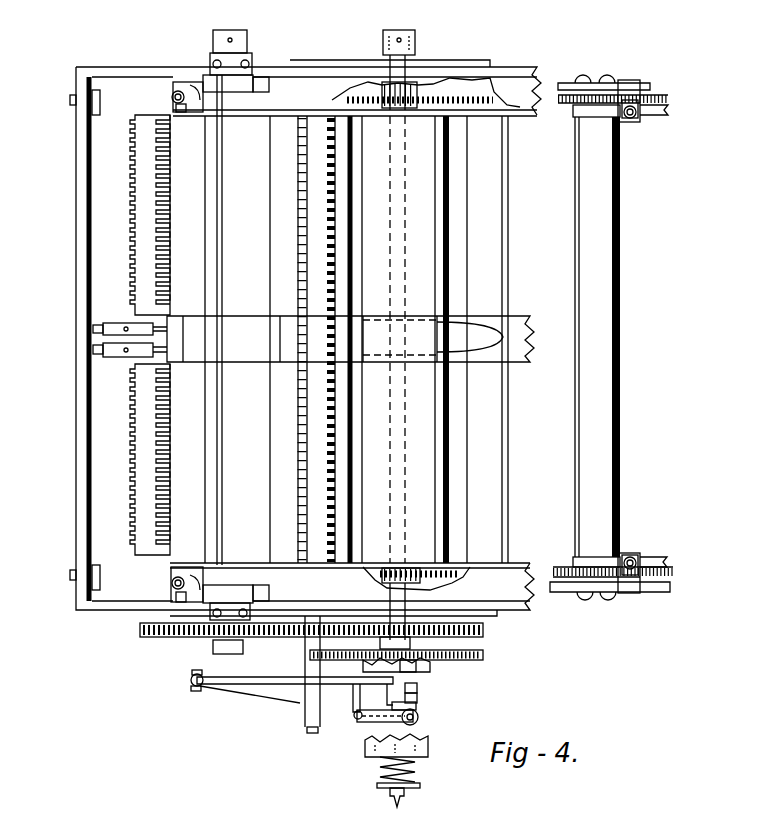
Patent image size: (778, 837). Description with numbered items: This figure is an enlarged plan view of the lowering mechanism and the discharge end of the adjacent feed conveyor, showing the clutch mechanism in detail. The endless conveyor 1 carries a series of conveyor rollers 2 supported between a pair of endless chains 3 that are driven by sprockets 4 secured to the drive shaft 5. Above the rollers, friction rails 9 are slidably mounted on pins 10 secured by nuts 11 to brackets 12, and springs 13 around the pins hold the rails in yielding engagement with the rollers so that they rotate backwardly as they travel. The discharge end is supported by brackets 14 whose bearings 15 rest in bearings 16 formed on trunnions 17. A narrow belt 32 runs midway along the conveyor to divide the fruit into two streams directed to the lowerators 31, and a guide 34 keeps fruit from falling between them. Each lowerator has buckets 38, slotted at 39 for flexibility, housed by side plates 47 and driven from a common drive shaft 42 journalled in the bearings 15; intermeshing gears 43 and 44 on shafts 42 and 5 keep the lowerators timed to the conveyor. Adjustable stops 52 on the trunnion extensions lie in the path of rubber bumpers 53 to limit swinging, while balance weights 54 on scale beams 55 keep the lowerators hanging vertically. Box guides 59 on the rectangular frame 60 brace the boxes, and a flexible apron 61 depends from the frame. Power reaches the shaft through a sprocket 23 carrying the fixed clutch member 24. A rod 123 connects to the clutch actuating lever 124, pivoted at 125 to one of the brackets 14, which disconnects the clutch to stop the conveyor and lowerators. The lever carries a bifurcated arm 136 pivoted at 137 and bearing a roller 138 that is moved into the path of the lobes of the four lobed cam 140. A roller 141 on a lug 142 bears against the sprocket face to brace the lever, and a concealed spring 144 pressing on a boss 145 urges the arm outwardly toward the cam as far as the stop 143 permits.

The endless conveyor 1 is at (648, 339).
The conveyor rollers 2 is at (506, 478).
The endless chains 3 is at (440, 98).
The sprockets 4 is at (388, 95).
The drive shaft 5 is at (398, 130).
The friction rails 9 is at (655, 112).
The pins 10 is at (630, 120).
The nuts 11 is at (638, 104).
The brackets 12 is at (632, 84).
The springs 13 is at (603, 118).
The brackets 14 is at (296, 63).
The bearings 15 is at (213, 82).
The bearings 16 is at (258, 78).
The trunnions 17 is at (193, 80).
The sprocket 23 is at (468, 661).
The fixed clutch member 24 is at (430, 668).
The lowerators 31 is at (92, 212).
The belt 32 is at (520, 318).
The guide 34 is at (485, 340).
The buckets 38 is at (130, 264).
The slots 39 is at (130, 512).
The drive shaft 42 is at (215, 652).
The gear 43 is at (152, 640).
The gear 44 is at (485, 654).
The side plates 47 is at (253, 120).
The adjustable stops 52 is at (178, 95).
The rubber bumpers 53 is at (171, 97).
The balance weights 54 is at (113, 348).
The scale beams 55 is at (93, 350).
The box guides 59 is at (93, 113).
The rectangular frame 60 is at (86, 372).
The flexible apron 61 is at (94, 488).
The rod 123 is at (196, 692).
The clutch actuating lever 124 is at (275, 697).
The pivot 125 is at (312, 732).
The bifurcated arm 136 is at (375, 742).
The pivot 137 is at (356, 716).
The roller 138 is at (418, 722).
The four lobed cam 140 is at (428, 752).
The roller 141 is at (418, 685).
The lug 142 is at (418, 690).
The stop 143 is at (390, 735).
The concealed spring 144 is at (418, 703).
The boss 145 is at (418, 709).